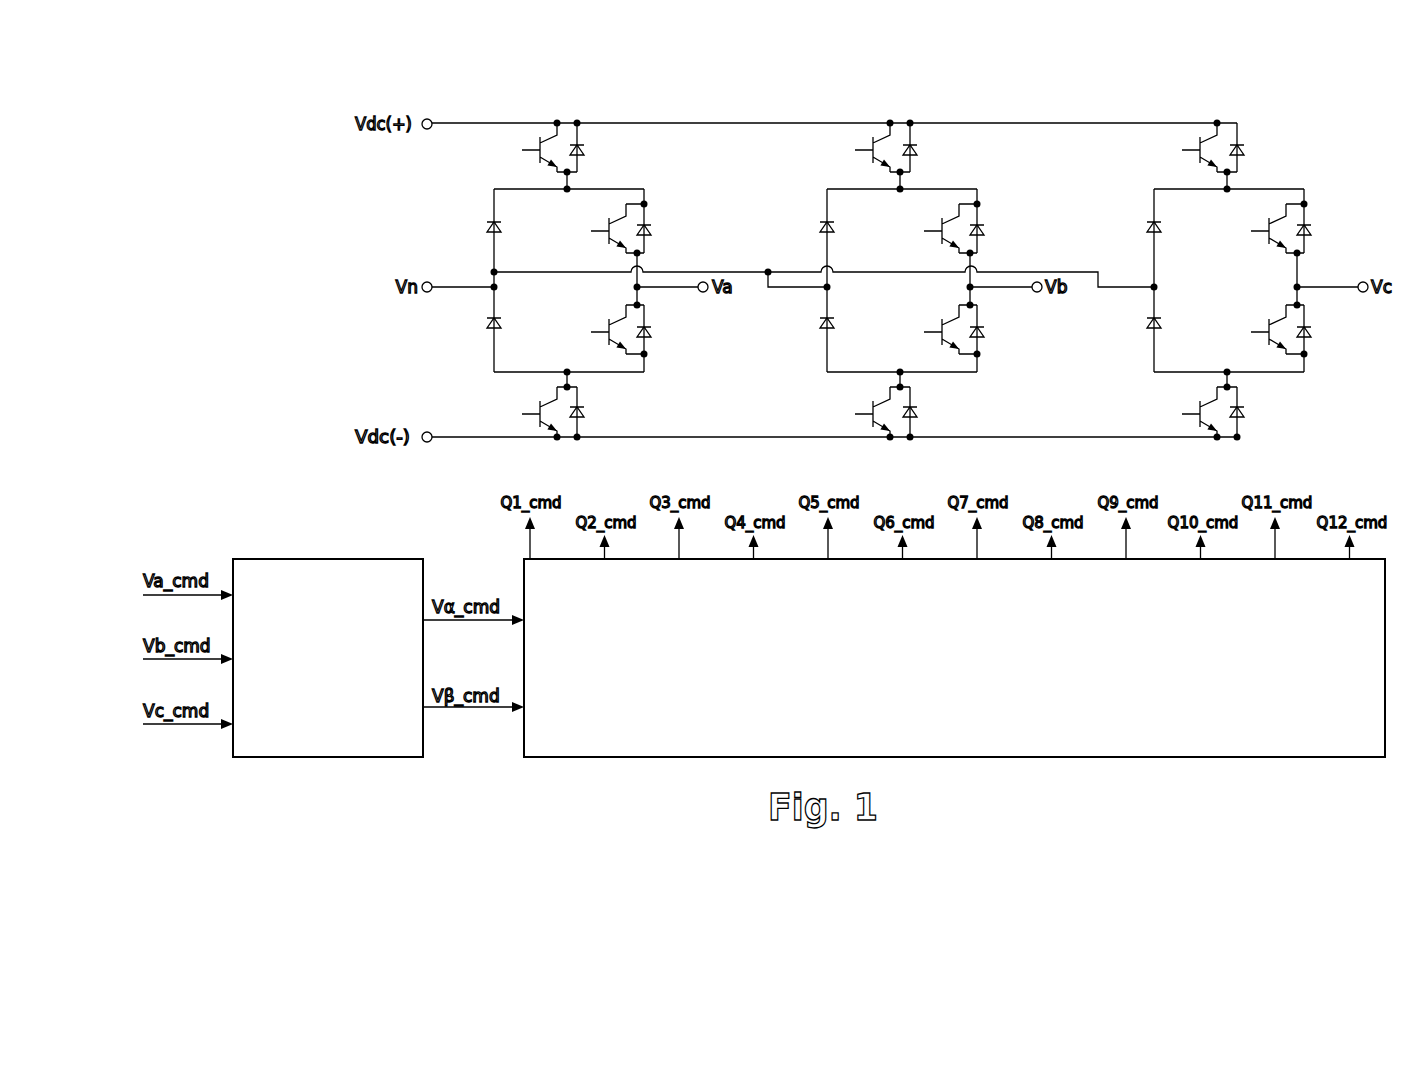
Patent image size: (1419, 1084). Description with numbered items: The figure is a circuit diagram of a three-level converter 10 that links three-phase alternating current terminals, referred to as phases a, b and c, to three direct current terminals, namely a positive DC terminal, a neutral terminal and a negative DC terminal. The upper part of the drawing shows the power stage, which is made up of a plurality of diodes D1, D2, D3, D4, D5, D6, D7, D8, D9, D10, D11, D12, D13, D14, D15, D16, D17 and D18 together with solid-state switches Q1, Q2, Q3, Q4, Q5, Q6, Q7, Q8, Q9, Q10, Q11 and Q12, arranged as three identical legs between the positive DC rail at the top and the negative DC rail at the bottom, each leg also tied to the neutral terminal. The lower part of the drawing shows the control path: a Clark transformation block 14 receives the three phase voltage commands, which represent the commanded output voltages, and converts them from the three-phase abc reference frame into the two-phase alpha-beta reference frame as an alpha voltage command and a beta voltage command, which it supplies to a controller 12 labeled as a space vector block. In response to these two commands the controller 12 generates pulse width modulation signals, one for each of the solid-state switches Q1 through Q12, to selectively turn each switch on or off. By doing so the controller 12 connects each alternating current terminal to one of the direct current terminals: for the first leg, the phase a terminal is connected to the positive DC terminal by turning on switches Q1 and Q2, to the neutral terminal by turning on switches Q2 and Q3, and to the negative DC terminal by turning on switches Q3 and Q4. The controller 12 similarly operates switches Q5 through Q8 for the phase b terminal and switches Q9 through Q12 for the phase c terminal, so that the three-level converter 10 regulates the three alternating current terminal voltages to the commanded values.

The three-level converter 10 is at (316, 96).
The controller 12 is at (1385, 573).
The Clark transformation block 14 is at (410, 559).
The solid-state switch Q1 is at (533, 147).
The solid-state switch Q2 is at (602, 228).
The solid-state switch Q3 is at (602, 329).
The solid-state switch Q4 is at (533, 412).
The solid-state switch Q5 is at (866, 147).
The solid-state switch Q6 is at (935, 228).
The solid-state switch Q7 is at (935, 329).
The solid-state switch Q8 is at (866, 412).
The solid-state switch Q9 is at (1193, 147).
The solid-state switch Q10 is at (1257, 228).
The solid-state switch Q11 is at (1257, 329).
The solid-state switch Q12 is at (1188, 412).
The diode D1 is at (592, 147).
The diode D2 is at (659, 221).
The diode D3 is at (659, 338).
The diode D4 is at (592, 412).
The diode D5 is at (483, 230).
The diode D6 is at (483, 329).
The diode D7 is at (925, 147).
The diode D8 is at (992, 221).
The diode D9 is at (992, 338).
The diode D10 is at (930, 412).
The diode D11 is at (810, 230).
The diode D12 is at (810, 329).
The diode D13 is at (1257, 147).
The diode D14 is at (1324, 221).
The diode D15 is at (1324, 338).
The diode D16 is at (1257, 412).
The diode D17 is at (1137, 230).
The diode D18 is at (1137, 329).